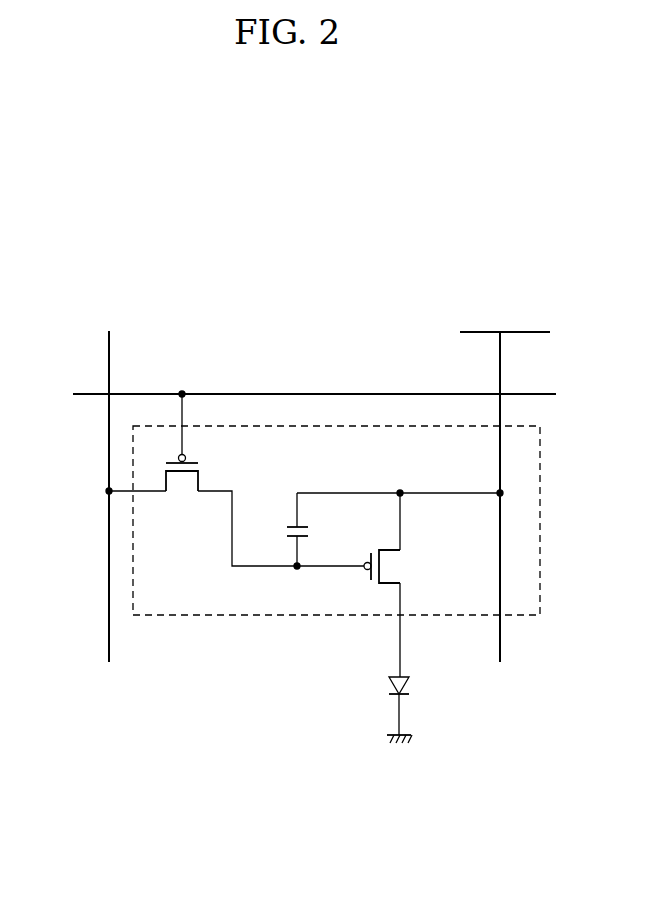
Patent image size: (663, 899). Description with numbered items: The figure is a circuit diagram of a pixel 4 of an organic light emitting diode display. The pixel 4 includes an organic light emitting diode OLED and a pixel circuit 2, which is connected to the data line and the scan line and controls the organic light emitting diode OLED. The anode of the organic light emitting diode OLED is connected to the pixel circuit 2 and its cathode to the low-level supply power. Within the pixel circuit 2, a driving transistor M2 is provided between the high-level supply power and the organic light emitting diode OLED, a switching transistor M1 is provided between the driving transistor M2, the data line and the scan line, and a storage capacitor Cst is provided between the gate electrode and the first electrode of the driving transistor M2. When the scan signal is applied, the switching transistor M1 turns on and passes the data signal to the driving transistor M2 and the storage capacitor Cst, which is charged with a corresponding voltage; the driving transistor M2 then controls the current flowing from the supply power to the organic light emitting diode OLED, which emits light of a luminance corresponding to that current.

The pixel 4 is at (309, 326).
The pixel circuit 2 is at (540, 521).
The switching transistor M1 is at (179, 490).
The driving transistor M2 is at (402, 569).
The storage capacitor Cst is at (319, 529).
The organic light emitting diode OLED is at (360, 688).